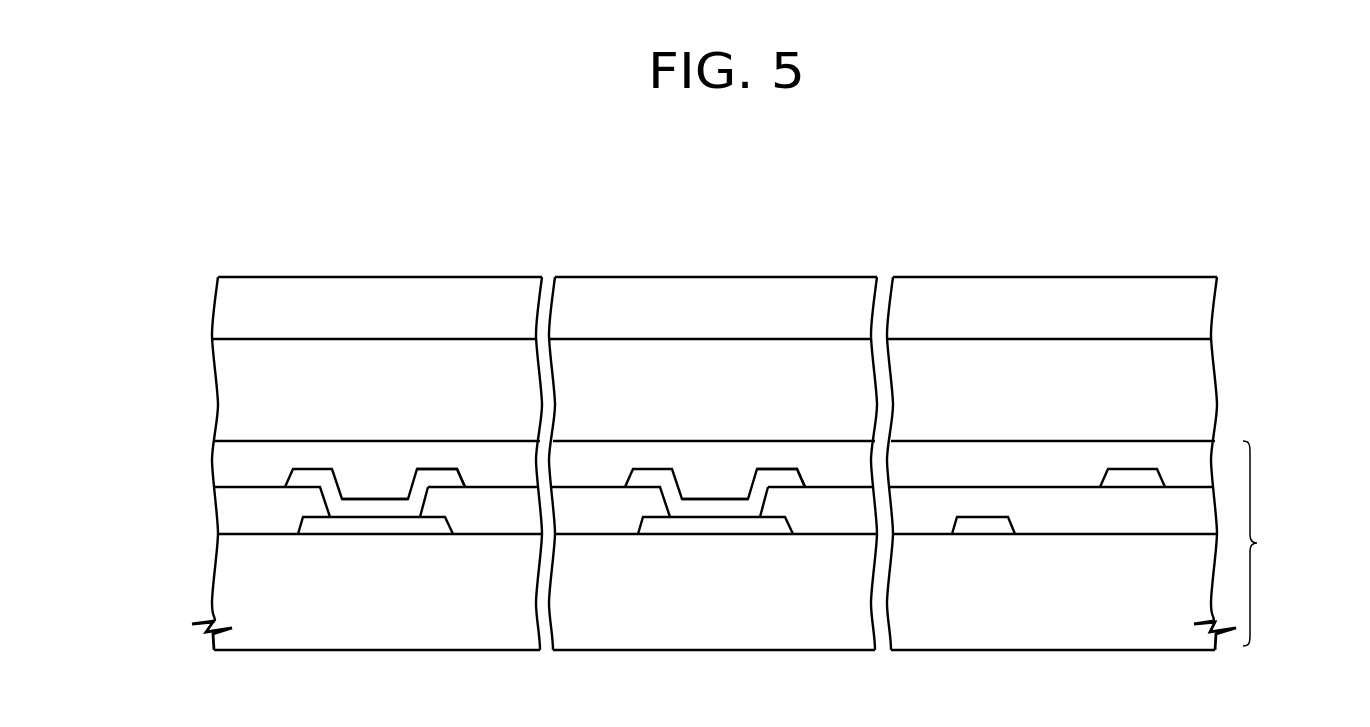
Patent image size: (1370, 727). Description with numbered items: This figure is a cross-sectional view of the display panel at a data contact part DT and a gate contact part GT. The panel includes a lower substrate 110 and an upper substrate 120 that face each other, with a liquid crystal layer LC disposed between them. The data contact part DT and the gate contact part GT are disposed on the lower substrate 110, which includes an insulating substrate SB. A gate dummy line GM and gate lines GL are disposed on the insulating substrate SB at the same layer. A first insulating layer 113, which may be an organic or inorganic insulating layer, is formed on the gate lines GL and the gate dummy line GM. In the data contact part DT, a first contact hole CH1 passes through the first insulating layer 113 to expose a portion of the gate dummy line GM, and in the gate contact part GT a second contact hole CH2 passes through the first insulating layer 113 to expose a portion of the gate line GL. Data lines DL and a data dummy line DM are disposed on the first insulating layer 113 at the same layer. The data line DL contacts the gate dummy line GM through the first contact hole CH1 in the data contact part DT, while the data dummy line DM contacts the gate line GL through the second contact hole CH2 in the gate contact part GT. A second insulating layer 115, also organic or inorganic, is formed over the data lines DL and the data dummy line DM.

The upper substrate 120 is at (1207, 312).
The liquid crystal layer LC is at (1207, 392).
The lower substrate 110 is at (1272, 543).
The second insulating layer 115 is at (228, 466).
The first insulating layer 113 is at (228, 513).
The insulating substrate SB is at (228, 588).
The data contact part DT is at (307, 431).
The data line DL is at (438, 478).
The gate dummy line GM is at (363, 528).
The first contact hole CH1 is at (430, 502).
The gate contact part GT is at (647, 431).
The data dummy line DM is at (778, 478).
The gate line GL is at (703, 528).
The second contact hole CH2 is at (770, 502).